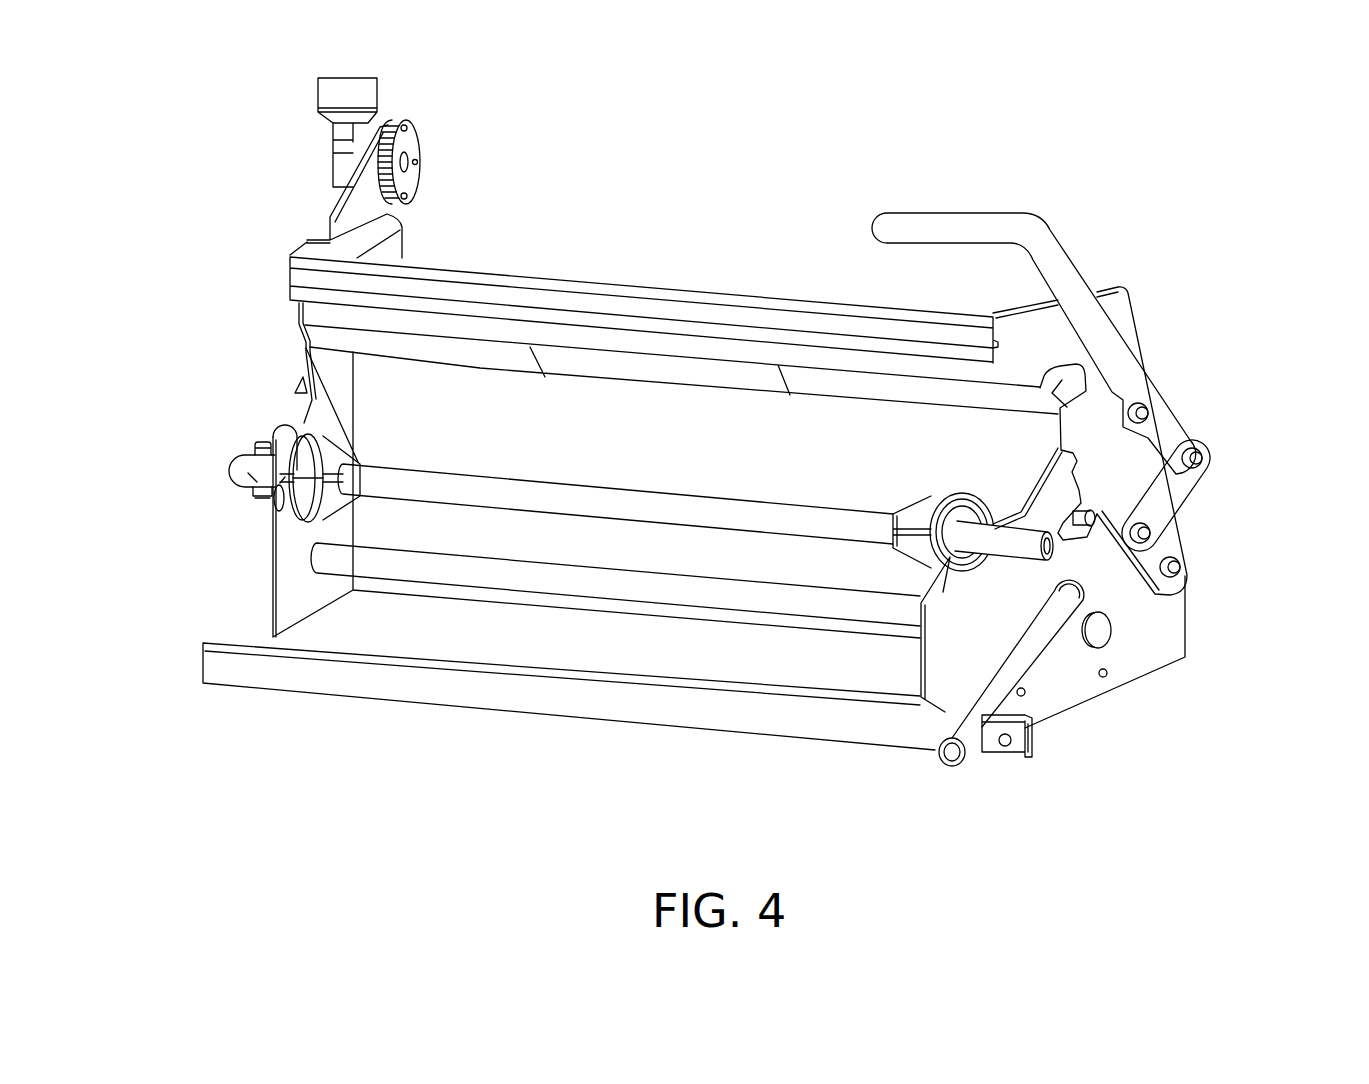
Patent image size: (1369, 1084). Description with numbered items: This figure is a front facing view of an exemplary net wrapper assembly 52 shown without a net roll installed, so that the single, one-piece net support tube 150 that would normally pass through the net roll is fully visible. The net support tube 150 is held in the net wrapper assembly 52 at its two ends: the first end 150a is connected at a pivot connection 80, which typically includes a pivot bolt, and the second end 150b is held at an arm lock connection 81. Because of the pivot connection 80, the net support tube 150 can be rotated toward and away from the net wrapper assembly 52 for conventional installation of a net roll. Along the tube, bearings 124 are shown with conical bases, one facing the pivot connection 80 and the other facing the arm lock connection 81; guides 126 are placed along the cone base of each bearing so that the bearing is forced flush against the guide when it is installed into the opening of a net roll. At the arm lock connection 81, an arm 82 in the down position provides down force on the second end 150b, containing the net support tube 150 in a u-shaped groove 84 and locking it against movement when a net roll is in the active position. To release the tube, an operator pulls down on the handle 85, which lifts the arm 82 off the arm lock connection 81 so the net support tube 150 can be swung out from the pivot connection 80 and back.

The net wrapper assembly 52 is at (215, 215).
The pivot connection 80 is at (268, 444).
The arm lock connection 81 is at (1077, 553).
The arm 82 is at (1160, 568).
The u-shaped groove 84 is at (993, 573).
The handle 85 is at (1045, 240).
The bearings 124 is at (335, 548).
The guides 126 is at (280, 500).
The net support tube 150 is at (625, 505).
The first end of the net support tube 150a is at (247, 486).
The second end of the net support tube 150b is at (1023, 543).